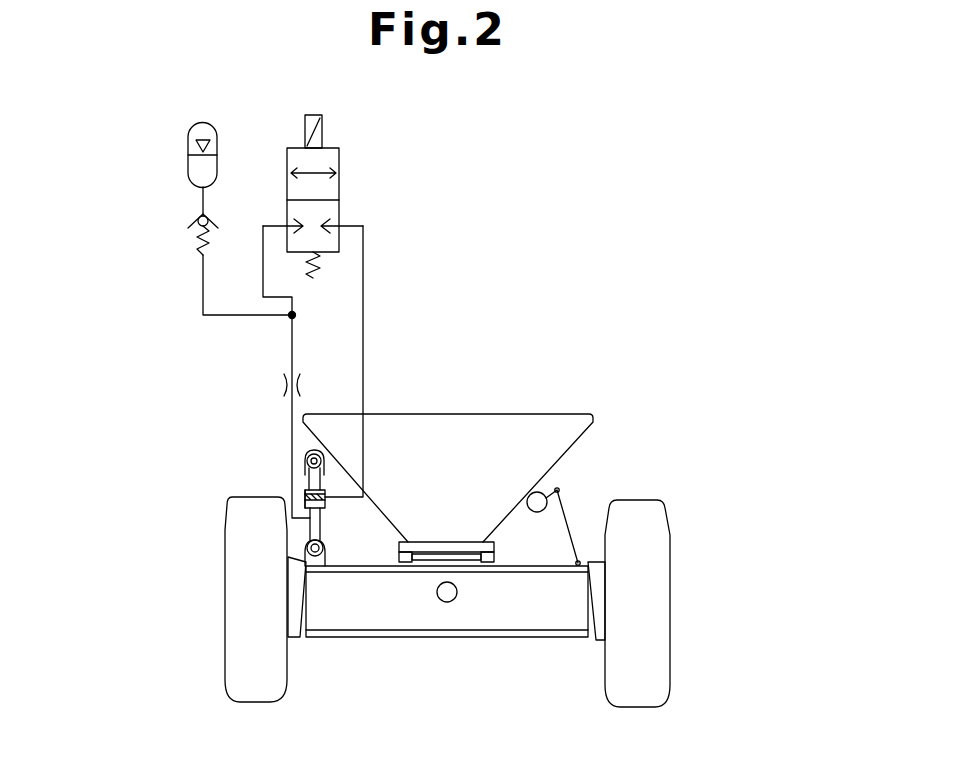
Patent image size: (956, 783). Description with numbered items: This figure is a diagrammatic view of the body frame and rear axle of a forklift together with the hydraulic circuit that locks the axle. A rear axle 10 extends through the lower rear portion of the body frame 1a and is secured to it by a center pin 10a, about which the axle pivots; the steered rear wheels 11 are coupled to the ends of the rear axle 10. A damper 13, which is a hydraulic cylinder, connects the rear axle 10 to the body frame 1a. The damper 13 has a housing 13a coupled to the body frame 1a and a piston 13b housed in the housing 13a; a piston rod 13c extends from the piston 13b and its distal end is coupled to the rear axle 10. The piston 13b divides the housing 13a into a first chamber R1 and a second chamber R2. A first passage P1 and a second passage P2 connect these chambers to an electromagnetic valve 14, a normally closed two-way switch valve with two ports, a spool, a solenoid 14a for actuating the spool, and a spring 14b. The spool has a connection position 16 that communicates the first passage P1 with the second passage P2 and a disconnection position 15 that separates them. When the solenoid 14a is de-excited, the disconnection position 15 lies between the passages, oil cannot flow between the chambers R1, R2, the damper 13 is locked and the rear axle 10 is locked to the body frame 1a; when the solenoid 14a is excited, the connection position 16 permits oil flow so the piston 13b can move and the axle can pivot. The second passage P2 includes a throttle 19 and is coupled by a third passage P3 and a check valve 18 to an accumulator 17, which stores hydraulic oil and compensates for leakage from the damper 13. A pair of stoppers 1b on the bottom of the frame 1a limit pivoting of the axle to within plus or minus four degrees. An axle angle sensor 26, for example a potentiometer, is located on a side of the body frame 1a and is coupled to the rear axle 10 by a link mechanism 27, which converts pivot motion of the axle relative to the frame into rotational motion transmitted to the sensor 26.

The body frame 1a is at (575, 440).
The stoppers 1b is at (404, 563).
The rear axle 10 is at (544, 638).
The center pin 10a is at (447, 603).
The rear wheels 11 is at (232, 681).
The damper (hydraulic cylinder) 13 is at (334, 463).
The housing 13a is at (321, 520).
The piston 13b is at (326, 506).
The piston rod 13c is at (318, 560).
The electromagnetic valve 14 is at (340, 148).
The solenoid 14a is at (312, 113).
The spring 14b is at (313, 278).
The disconnection position 15 is at (287, 218).
The connection position 16 is at (340, 188).
The accumulator 17 is at (190, 147).
The check valve 18 is at (197, 223).
The throttle 19 is at (283, 386).
The axle angle sensor 26 is at (533, 493).
The link mechanism 27 is at (562, 521).
The first passage P1 is at (365, 371).
The second passage P2 is at (290, 427).
The third passage P3 is at (203, 316).
The first chamber R1 is at (305, 499).
The second chamber R2 is at (305, 523).